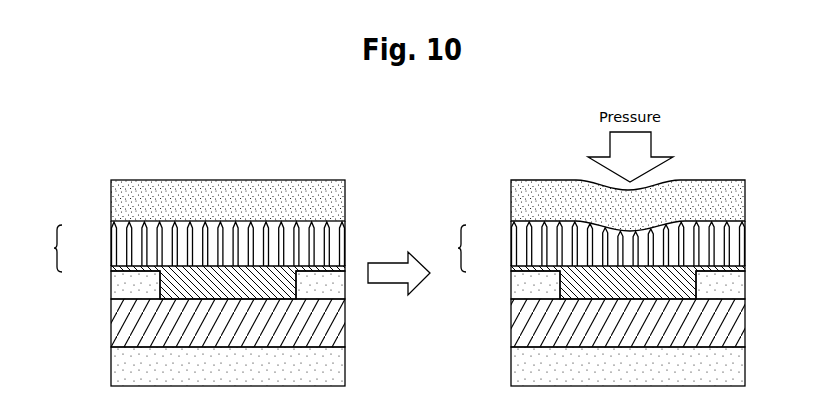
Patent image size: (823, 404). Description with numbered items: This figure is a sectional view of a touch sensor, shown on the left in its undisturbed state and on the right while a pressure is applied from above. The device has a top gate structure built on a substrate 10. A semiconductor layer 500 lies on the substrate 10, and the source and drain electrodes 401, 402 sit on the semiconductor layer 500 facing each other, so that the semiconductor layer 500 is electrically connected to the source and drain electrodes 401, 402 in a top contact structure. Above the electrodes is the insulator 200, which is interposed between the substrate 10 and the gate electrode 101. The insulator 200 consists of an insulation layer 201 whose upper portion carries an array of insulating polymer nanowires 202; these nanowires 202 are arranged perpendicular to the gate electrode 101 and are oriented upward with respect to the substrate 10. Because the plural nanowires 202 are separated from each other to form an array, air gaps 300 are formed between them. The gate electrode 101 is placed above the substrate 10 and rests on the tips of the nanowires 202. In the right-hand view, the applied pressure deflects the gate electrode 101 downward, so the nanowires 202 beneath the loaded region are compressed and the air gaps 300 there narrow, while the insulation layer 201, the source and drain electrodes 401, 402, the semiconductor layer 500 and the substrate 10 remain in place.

The substrate 10 is at (347, 362).
The gate electrode 101 is at (348, 198).
The insulator 200 is at (245, 248).
The insulation layer 201 is at (110, 269).
The insulating polymer nanowires 202 is at (110, 234).
The air gaps 300 is at (338, 235).
The source electrode 401 is at (110, 292).
The drain electrode 402 is at (347, 293).
The semiconductor layer 500 is at (347, 330).